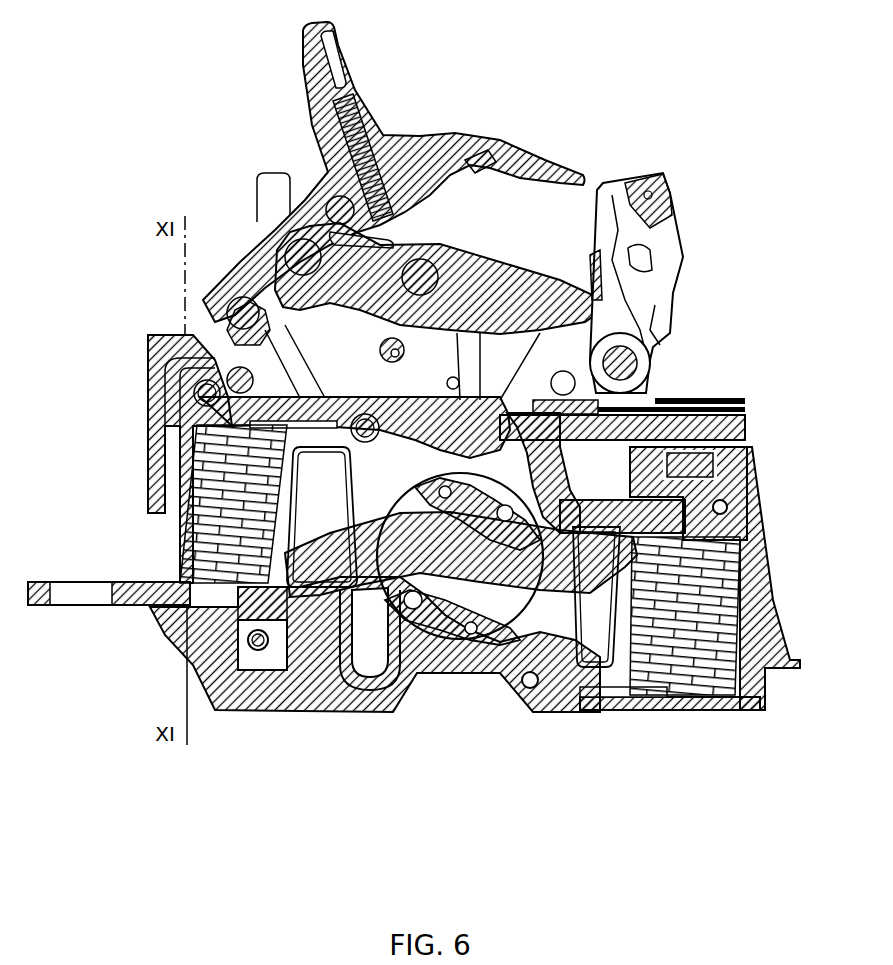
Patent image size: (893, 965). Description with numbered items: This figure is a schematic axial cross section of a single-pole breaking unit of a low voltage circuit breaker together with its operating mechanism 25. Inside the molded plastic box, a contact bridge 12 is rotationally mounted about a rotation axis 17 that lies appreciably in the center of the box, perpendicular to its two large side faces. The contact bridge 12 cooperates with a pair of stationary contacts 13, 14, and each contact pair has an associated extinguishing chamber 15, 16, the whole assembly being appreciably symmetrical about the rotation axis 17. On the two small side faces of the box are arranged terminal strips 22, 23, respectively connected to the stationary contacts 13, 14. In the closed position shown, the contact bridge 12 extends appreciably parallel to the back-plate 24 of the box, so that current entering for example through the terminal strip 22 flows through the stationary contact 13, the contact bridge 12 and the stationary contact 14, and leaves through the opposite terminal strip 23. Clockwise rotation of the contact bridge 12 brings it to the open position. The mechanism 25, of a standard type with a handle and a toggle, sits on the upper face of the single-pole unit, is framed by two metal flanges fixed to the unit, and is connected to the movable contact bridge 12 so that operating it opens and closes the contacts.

The contact bridge 12 is at (370, 715).
The stationary contact 13 is at (267, 705).
The stationary contact 14 is at (633, 443).
The extinguishing chamber 15 is at (700, 593).
The extinguishing chamber 16 is at (193, 487).
The rotation axis 17 is at (467, 567).
The terminal strip 22 is at (728, 413).
The terminal strip 23 is at (133, 604).
The back-plate 24 is at (650, 718).
The mechanism 25 is at (628, 130).